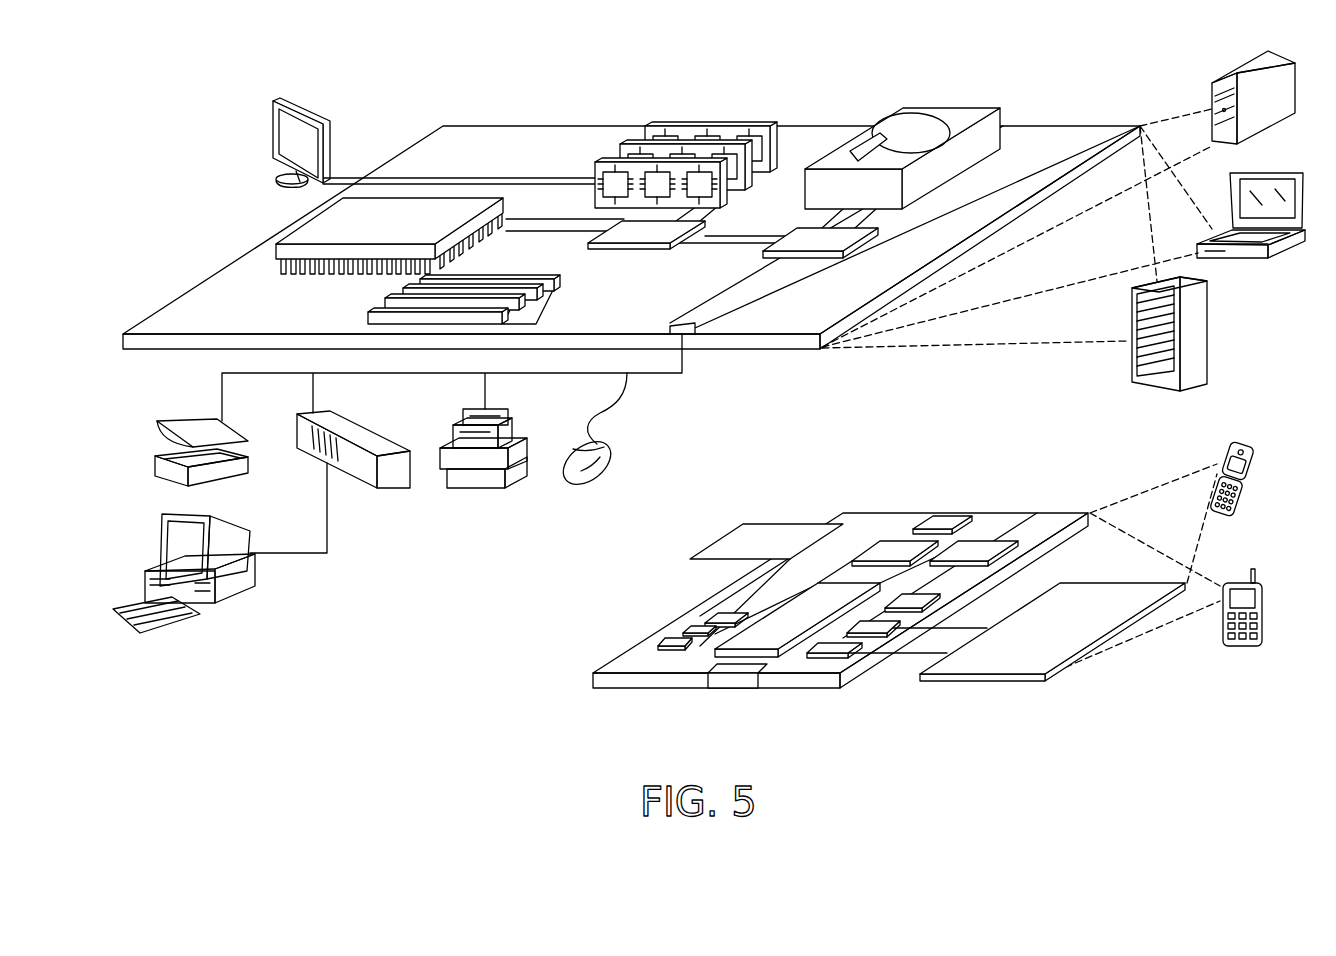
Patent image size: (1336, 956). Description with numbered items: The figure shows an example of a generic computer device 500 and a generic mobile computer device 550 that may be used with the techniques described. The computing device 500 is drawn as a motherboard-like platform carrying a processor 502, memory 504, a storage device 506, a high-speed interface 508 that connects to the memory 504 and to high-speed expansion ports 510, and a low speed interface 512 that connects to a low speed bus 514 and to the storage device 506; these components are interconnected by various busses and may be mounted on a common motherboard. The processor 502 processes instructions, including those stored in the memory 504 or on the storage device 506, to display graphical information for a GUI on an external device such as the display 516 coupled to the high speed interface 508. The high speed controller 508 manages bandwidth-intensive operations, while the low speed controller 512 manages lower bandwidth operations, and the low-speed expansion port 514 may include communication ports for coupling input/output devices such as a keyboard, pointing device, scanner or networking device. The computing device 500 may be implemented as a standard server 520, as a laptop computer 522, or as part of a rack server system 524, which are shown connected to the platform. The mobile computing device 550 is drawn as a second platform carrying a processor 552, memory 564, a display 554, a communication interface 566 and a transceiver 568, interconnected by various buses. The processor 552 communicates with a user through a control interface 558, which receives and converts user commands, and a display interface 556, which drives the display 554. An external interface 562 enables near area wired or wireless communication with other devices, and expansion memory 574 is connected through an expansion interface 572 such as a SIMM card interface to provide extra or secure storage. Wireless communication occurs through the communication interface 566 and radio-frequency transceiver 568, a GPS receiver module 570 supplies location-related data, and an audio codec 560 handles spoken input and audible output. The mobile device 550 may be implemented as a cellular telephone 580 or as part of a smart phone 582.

The computing device 500 is at (396, 76).
The processor 502 is at (300, 226).
The memory 504 is at (724, 118).
The storage device 506 is at (946, 107).
The high-speed interface 508 is at (660, 240).
The high-speed expansion ports 510 is at (395, 296).
The low speed interface 512 is at (796, 232).
The low speed bus 514 is at (688, 322).
The display 516 is at (276, 96).
The standard server 520 is at (1229, 75).
The laptop computer 522 is at (1280, 172).
The rack server system 524 is at (1210, 335).
The mobile computer device 550 is at (546, 699).
The processor 552 is at (769, 620).
The display 554 is at (1089, 590).
The display interface 556 is at (848, 650).
The control interface 558 is at (893, 624).
The audio codec 560 is at (922, 600).
The external interface 562 is at (732, 678).
The memory 564 is at (686, 628).
The communication interface 566 is at (893, 540).
The transceiver 568 is at (982, 540).
The GPS receiver module 570 is at (942, 522).
The expansion interface 572 is at (823, 515).
The expansion memory 574 is at (745, 520).
The cellular telephone 580 is at (1224, 440).
The smart phone 582 is at (1236, 580).